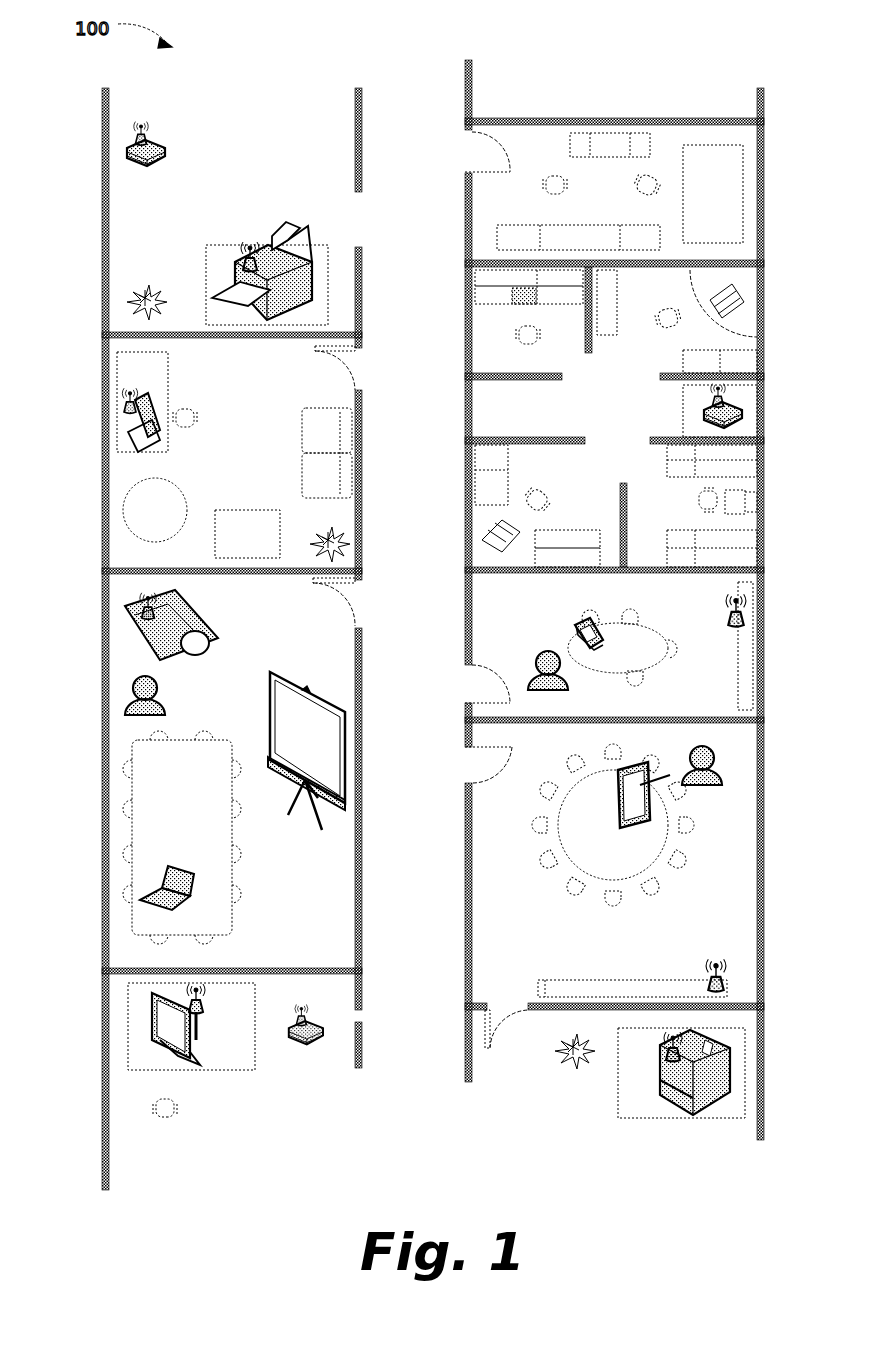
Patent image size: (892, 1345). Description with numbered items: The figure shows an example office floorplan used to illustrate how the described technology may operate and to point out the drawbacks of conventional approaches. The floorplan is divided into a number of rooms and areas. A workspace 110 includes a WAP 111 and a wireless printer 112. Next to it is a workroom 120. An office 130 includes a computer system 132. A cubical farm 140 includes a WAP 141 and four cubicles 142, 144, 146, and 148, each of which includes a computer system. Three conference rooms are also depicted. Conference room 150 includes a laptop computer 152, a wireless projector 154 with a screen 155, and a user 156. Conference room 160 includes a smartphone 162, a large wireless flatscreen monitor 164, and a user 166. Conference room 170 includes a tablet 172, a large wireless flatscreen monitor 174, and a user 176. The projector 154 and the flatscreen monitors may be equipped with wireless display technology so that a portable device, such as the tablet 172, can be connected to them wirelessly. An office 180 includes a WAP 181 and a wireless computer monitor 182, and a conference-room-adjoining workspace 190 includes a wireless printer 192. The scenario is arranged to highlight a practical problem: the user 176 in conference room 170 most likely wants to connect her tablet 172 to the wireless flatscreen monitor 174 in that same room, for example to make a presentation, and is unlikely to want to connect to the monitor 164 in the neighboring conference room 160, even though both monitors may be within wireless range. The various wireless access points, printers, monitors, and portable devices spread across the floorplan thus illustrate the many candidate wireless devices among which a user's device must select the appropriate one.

The workspace 110 is at (196, 218).
The WAP 111 is at (168, 133).
The wireless printer 112 is at (322, 285).
The workroom 120 is at (627, 206).
The office 130 is at (266, 487).
The computer system 132 is at (180, 401).
The cubical farm 140 is at (527, 414).
The WAP 141 is at (730, 415).
The cubicle 142 is at (513, 374).
The cubicle 144 is at (650, 359).
The cubicle 146 is at (593, 481).
The cubicle 148 is at (674, 514).
The conference room 150 is at (319, 929).
The laptop computer 152 is at (185, 872).
The wireless projector 154 is at (190, 604).
The screen 155 is at (300, 680).
The user 156 is at (178, 727).
The conference room 160 is at (525, 614).
The smartphone 162 is at (600, 625).
The large wireless flatscreen monitor 164 is at (753, 700).
The user 166 is at (581, 696).
The conference room 170 is at (723, 925).
The tablet 172 is at (612, 828).
The wireless flatscreen monitor 174 is at (606, 978).
The user 176 is at (736, 800).
The office 180 is at (288, 1123).
The WAP 181 is at (320, 1020).
The wireless computer monitor 182 is at (230, 1058).
The conference-room-adjoining workspace 190 is at (526, 1084).
The wireless printer 192 is at (667, 1108).